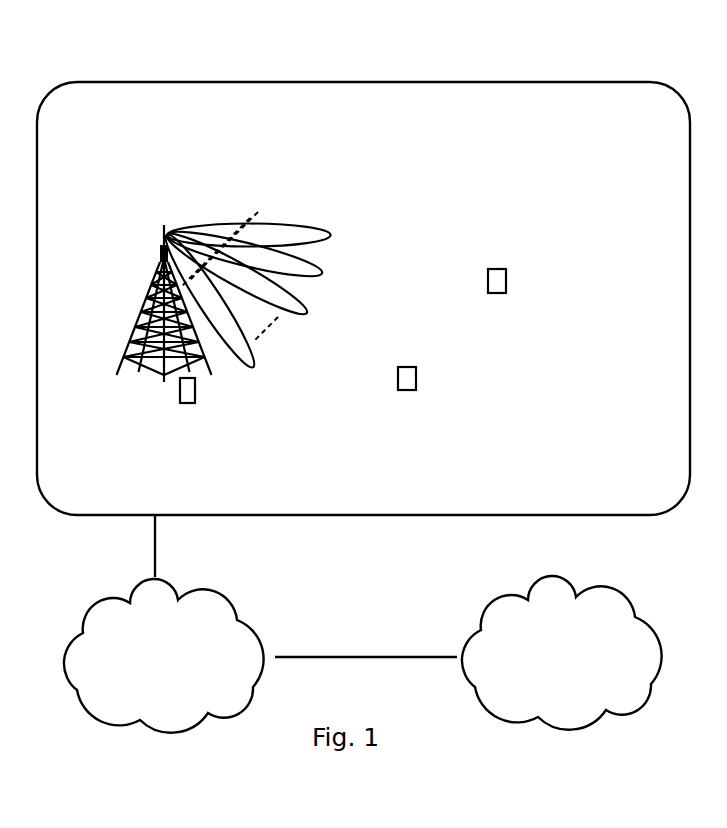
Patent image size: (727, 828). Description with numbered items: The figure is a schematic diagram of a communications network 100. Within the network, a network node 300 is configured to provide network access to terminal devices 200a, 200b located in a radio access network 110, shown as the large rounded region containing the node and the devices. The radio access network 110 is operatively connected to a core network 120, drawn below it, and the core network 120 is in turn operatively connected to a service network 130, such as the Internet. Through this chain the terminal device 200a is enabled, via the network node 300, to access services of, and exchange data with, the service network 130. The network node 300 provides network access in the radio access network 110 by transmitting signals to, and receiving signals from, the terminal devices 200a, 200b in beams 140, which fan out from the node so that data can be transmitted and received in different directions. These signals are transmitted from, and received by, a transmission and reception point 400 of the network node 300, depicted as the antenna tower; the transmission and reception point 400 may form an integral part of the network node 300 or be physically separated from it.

The communications network 100 is at (112, 60).
The radio access network 110 is at (664, 493).
The core network 120 is at (193, 676).
The service network 130 is at (592, 674).
The beams 140 is at (257, 212).
The terminal device 200a is at (416, 378).
The terminal device 200b is at (506, 277).
The network node 300 is at (180, 388).
The transmission and reception point 400 is at (160, 245).